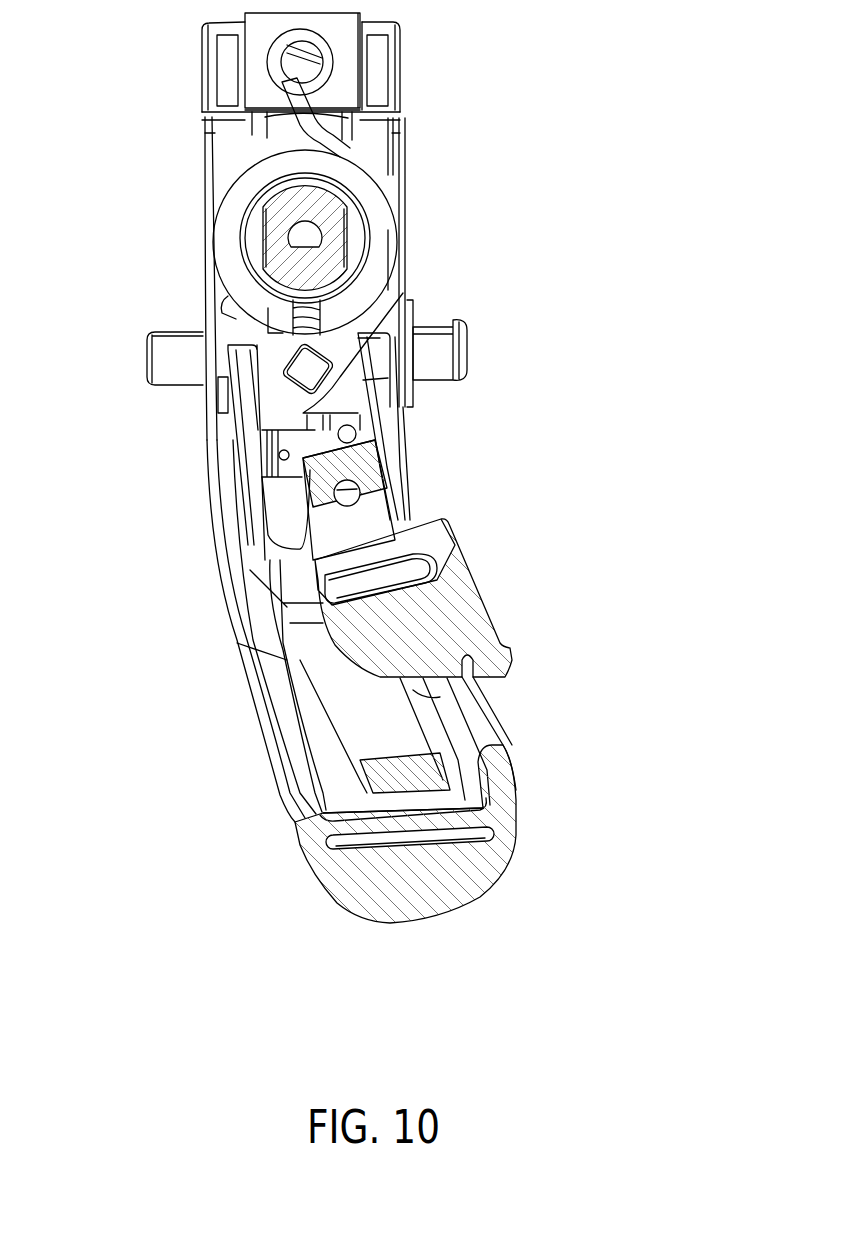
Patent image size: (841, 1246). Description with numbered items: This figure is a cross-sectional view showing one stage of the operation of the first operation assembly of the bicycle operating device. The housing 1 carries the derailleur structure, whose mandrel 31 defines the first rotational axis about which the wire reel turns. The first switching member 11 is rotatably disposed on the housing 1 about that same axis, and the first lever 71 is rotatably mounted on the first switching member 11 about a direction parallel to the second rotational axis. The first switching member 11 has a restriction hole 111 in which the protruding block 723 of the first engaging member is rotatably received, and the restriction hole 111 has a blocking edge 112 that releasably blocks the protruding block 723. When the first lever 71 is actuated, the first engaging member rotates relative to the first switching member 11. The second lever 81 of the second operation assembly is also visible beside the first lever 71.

The housing 1 is at (376, 53).
The first switching member 11 is at (352, 175).
The mandrel 31 is at (278, 230).
The restriction hole 111 is at (287, 400).
The blocking edge 112 is at (287, 400).
The protruding block 723 is at (307, 372).
The second lever 81 is at (455, 600).
The first lever 71 is at (380, 743).